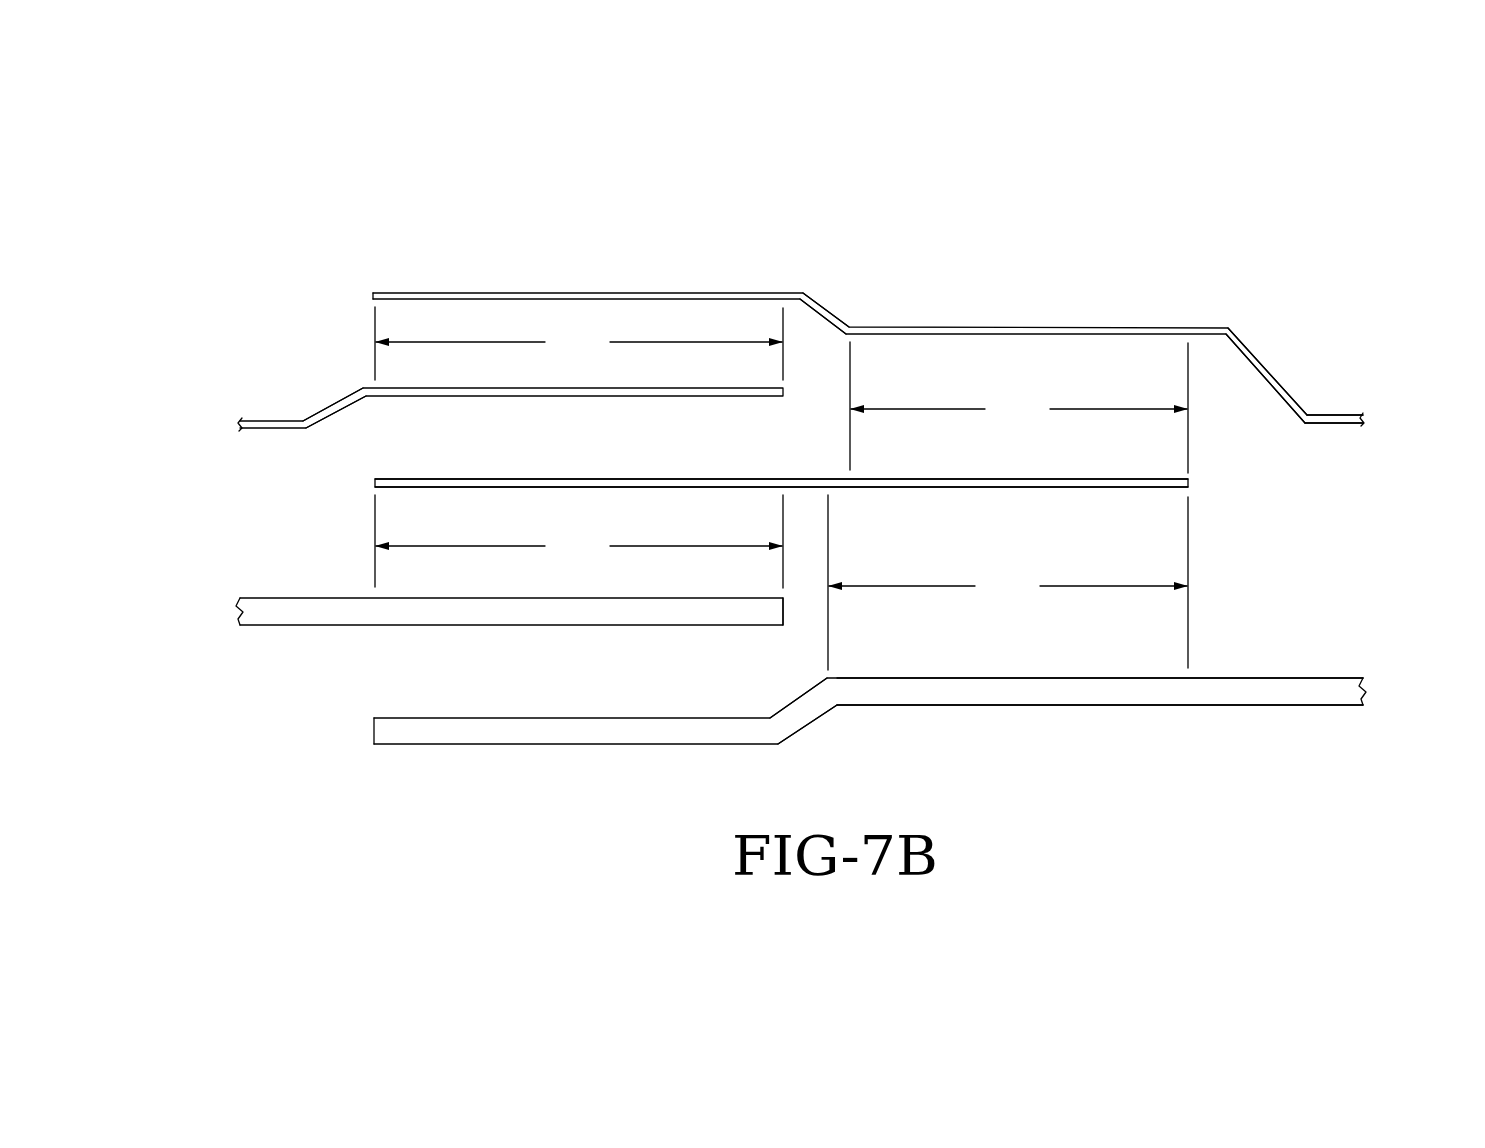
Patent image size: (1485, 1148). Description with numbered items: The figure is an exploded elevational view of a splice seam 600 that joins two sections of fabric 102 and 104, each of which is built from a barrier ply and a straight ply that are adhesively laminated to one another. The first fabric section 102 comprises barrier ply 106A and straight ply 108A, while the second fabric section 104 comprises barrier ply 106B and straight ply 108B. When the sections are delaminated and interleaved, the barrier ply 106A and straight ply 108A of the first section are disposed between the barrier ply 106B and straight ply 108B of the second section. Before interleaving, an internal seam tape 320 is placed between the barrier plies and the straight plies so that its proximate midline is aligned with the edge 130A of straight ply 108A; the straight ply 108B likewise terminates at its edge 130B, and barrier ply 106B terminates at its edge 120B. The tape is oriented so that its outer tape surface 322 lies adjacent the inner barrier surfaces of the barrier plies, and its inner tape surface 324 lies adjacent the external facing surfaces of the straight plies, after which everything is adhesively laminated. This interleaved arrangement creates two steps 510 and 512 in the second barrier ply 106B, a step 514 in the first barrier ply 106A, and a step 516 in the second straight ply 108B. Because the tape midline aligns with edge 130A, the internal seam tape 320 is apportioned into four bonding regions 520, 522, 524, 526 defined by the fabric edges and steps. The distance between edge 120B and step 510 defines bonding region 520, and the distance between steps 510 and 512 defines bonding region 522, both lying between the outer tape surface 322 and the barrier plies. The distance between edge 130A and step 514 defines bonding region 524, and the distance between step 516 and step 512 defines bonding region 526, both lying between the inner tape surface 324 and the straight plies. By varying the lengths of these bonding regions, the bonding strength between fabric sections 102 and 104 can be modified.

The splice seam 600 is at (1000, 222).
The fabric section 102 is at (200, 402).
The fabric section 104 is at (1382, 400).
The barrier ply 106A is at (273, 417).
The barrier ply 106B is at (1329, 412).
The straight ply 108A is at (296, 628).
The straight ply 108B is at (1310, 711).
The edge 120B is at (372, 294).
The edge 130A is at (783, 608).
The edge 130B is at (373, 730).
The internal seam tape 320 is at (538, 474).
The outer tape surface 322 is at (597, 479).
The inner tape surface 324 is at (902, 488).
The step 510 is at (835, 313).
The step 512 is at (1258, 353).
The step 514 is at (340, 398).
The step 516 is at (813, 722).
The bonding region 520 is at (579, 343).
The bonding region 522 is at (1019, 407).
The bonding region 524 is at (579, 541).
The bonding region 526 is at (1008, 582).